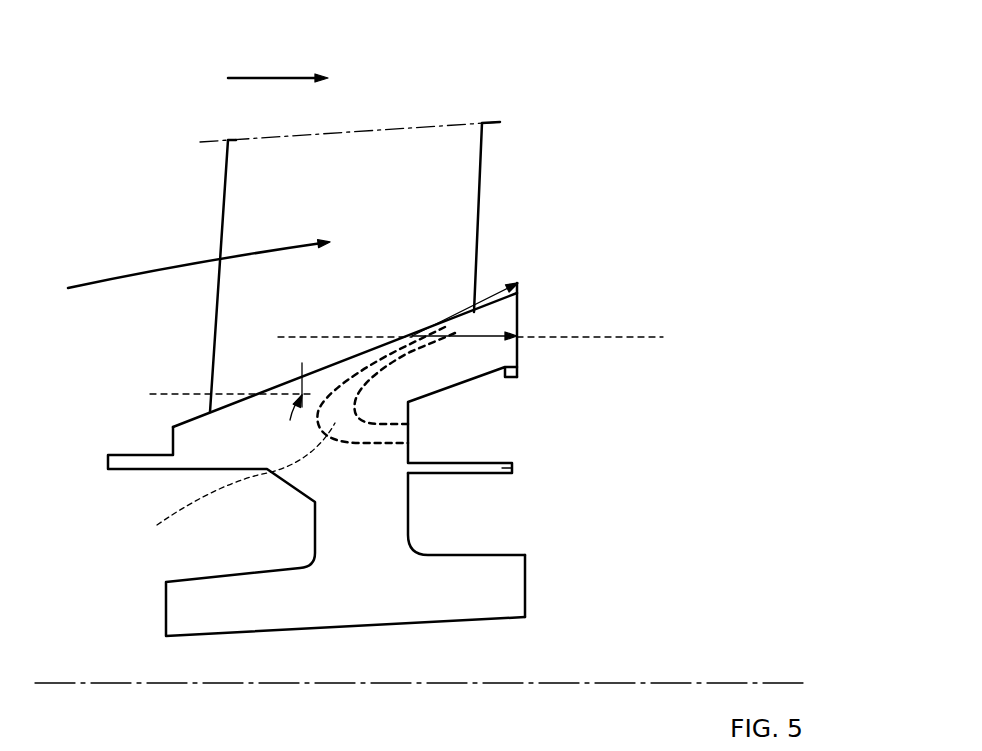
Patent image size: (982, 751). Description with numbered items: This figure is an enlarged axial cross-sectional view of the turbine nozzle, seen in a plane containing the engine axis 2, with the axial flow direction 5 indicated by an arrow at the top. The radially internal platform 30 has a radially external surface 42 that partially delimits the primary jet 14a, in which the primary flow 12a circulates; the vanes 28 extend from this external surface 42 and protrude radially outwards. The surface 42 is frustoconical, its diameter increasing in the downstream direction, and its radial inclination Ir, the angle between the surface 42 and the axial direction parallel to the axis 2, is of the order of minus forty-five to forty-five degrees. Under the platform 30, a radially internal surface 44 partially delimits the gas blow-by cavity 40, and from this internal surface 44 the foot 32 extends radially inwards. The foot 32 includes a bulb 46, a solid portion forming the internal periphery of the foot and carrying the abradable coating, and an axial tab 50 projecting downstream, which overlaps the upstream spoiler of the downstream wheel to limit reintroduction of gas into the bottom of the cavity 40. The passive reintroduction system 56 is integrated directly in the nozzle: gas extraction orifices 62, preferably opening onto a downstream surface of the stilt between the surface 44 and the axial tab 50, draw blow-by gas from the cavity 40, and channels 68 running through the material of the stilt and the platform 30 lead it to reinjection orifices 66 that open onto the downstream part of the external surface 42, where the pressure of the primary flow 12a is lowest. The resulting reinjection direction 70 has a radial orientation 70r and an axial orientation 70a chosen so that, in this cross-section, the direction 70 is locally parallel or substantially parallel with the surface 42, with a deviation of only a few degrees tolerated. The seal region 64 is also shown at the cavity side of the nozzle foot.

The axis 2 is at (727, 683).
The axial flow direction 5 is at (268, 77).
The primary flow 12a is at (173, 262).
The primary jet 14a is at (388, 181).
The vanes 28 is at (462, 190).
The radially internal platform 30 is at (497, 360).
The foot 32 is at (164, 611).
The gas blow-by cavity 40 is at (503, 525).
The radially external surface 42 is at (275, 387).
The radially internal surface 44 is at (452, 385).
The bulb 46 is at (507, 588).
The axial tab 50 is at (502, 468).
The passive system for reintroducing blow-by gas 56 is at (367, 398).
The gas extraction orifices 62 is at (408, 432).
The seal 64 is at (383, 510).
The reinjection orifices 66 is at (412, 334).
The channels 68 is at (227, 489).
The reinjection direction 70 is at (490, 295).
The radial orientation 70r is at (522, 296).
The axial orientation 70a is at (483, 336).
The radial inclination Ir is at (302, 375).